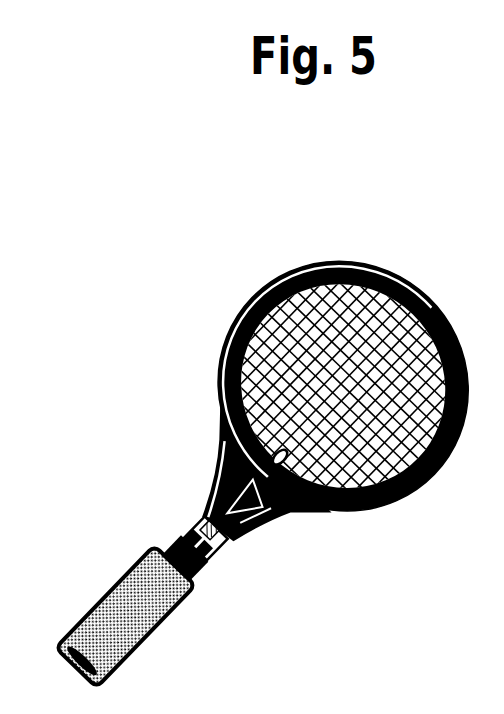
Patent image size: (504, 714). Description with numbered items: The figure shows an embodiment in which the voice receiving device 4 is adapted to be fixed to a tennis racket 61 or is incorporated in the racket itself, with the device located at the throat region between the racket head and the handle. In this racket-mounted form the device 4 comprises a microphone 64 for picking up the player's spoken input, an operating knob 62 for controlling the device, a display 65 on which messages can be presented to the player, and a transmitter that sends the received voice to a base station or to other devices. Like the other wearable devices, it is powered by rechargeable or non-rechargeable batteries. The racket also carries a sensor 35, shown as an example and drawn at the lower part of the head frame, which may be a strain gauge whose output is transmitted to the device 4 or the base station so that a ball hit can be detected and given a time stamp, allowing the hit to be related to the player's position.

The voice receiving device 4 is at (163, 522).
The sensor 35 is at (380, 494).
The tennis racket 61 is at (177, 512).
The operating knob 62 is at (207, 560).
The microphone 64 is at (215, 548).
The display 65 is at (203, 500).